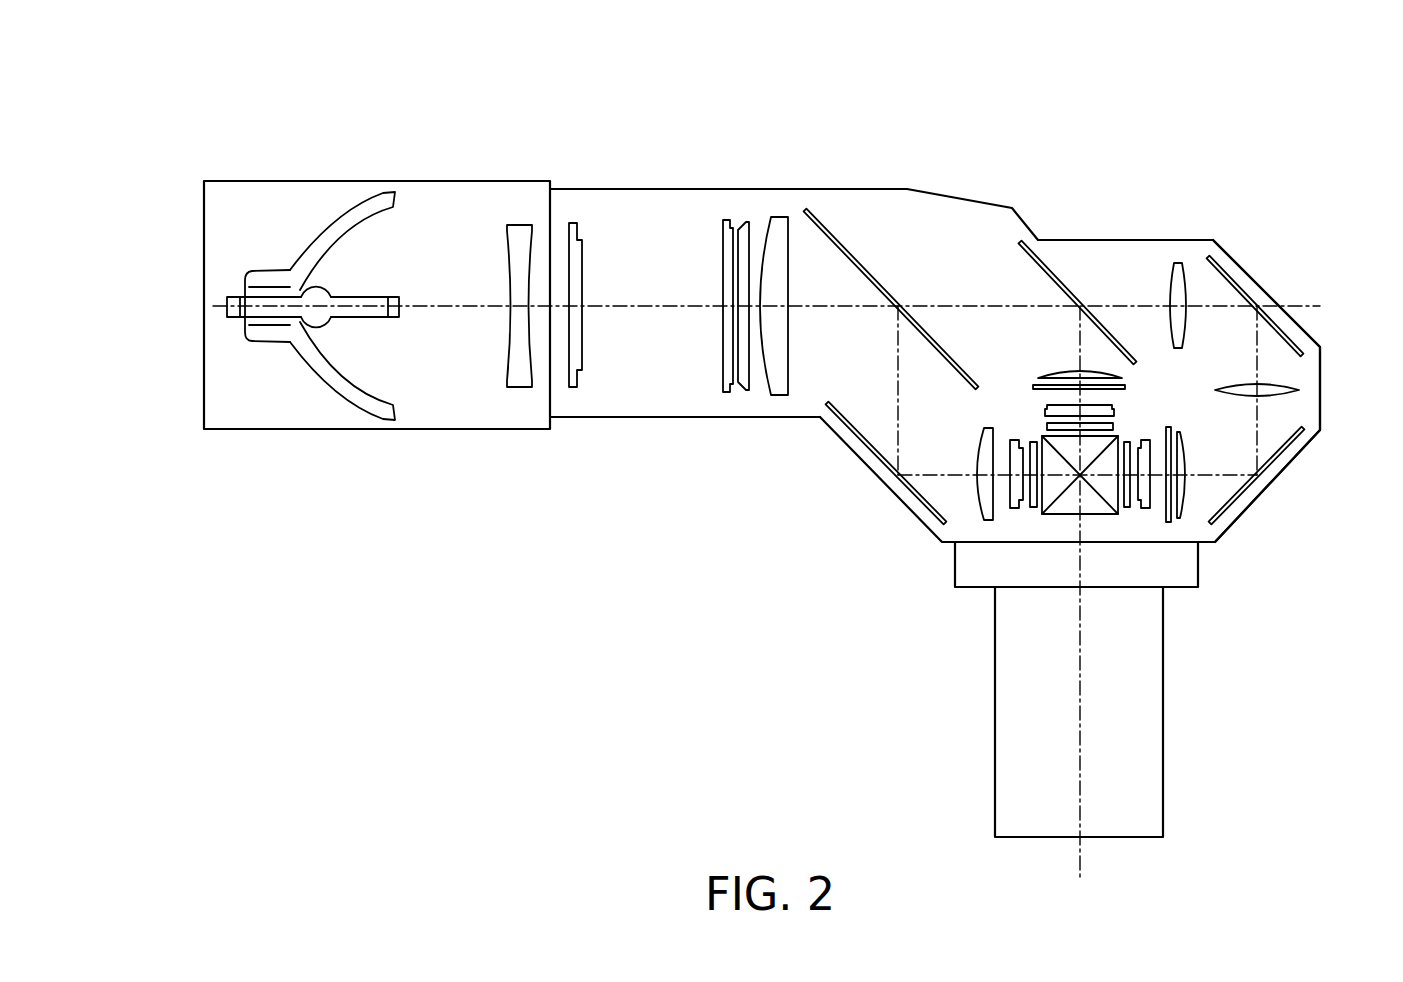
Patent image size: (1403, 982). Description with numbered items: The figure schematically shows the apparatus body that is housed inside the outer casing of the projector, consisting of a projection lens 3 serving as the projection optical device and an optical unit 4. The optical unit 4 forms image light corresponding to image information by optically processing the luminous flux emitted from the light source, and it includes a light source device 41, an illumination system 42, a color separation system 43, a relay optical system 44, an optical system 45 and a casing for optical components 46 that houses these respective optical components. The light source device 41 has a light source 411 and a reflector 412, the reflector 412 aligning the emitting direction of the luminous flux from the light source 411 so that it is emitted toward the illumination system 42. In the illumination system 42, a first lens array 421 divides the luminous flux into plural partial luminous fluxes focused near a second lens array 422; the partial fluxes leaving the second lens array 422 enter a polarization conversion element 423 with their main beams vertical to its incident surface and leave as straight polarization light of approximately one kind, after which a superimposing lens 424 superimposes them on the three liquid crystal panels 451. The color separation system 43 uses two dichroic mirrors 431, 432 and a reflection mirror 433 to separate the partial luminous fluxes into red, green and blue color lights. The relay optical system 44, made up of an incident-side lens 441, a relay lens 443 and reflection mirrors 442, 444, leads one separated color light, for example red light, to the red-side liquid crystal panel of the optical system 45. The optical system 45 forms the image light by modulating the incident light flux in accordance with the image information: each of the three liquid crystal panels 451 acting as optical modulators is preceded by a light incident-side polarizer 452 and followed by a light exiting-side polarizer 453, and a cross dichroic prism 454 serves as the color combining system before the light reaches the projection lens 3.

The projection lens 3 is at (1148, 706).
The optical unit 4 is at (1056, 88).
The light source device 41 is at (375, 458).
The light source 411 is at (315, 321).
The reflector 412 is at (350, 392).
The illumination system 42 is at (643, 445).
The first lens array 421 is at (578, 388).
The second lens array 422 is at (729, 391).
The polarization conversion element 423 is at (744, 391).
The superimposing lens 424 is at (776, 396).
The color separation system 43 is at (910, 243).
The dichroic mirror 431 is at (847, 258).
The dichroic mirror 432 is at (1066, 276).
The reflection mirror 433 is at (921, 504).
The relay optical system 44 is at (1148, 260).
The incident-side lens 441 is at (1178, 262).
The reflection mirror 442 is at (1240, 283).
The relay lens 443 is at (1300, 387).
The reflection mirror 444 is at (1237, 505).
The optical system 45 is at (1152, 525).
The liquid crystal panel 451 is at (967, 612).
The light incident-side polarizer 452 is at (1125, 373).
The light exiting-side polarizer 453 is at (1113, 427).
The cross dichroic prism 454 is at (1057, 445).
The casing for optical components 46 is at (1293, 320).